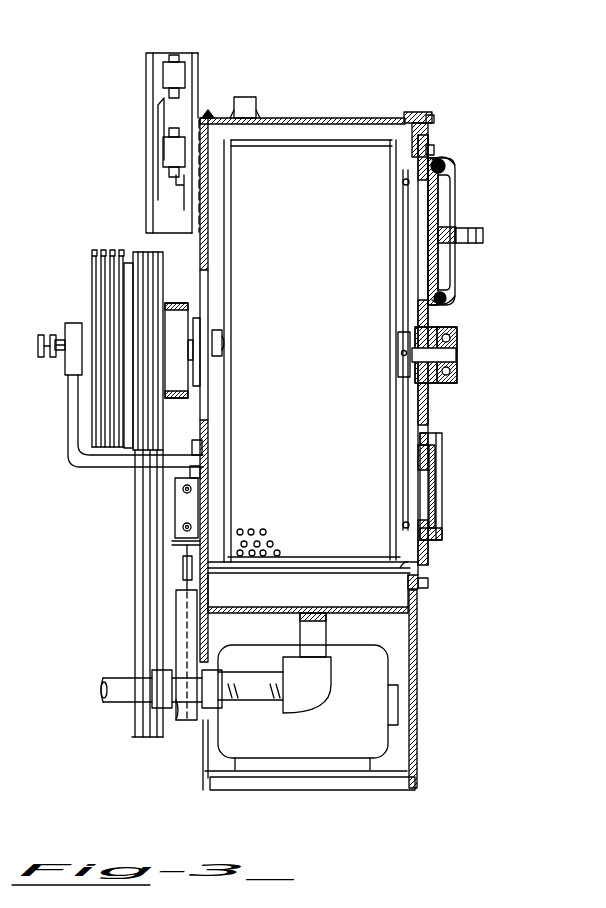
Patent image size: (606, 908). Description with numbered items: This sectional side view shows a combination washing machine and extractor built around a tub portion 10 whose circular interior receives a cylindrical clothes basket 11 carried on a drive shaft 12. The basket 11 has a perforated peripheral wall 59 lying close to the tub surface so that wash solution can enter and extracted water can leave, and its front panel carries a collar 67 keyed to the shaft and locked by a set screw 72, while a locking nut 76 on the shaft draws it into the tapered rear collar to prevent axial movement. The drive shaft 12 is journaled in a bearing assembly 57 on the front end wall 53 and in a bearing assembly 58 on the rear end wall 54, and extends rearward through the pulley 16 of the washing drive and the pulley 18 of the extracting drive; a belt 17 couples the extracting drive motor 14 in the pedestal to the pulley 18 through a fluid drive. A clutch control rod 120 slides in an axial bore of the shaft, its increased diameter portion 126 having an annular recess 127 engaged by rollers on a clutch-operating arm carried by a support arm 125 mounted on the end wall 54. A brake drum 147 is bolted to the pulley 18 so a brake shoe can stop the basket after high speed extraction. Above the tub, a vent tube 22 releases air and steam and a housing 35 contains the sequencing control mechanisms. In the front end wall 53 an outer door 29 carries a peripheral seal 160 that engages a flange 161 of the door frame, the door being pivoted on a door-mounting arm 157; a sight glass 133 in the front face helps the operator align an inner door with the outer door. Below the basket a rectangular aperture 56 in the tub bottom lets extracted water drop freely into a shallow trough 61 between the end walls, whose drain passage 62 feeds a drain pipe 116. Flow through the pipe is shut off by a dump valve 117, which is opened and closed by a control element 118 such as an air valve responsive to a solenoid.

The tub portion 10 is at (336, 120).
The clothes basket 11 is at (278, 138).
The drive shaft 12 is at (456, 355).
The extracting drive motor 14 is at (378, 678).
The pulley 16 is at (90, 252).
The belt 17 is at (125, 526).
The pulley 18 is at (134, 252).
The vent tube 22 is at (243, 96).
The outer door 29 is at (458, 192).
The housing 35 is at (203, 68).
The end wall 53 is at (426, 112).
The end wall 54 is at (207, 110).
The rectangular aperture 56 is at (420, 572).
The bearing assembly 57 is at (458, 333).
The bearing assembly 58 is at (201, 323).
The perforated peripheral wall 59 is at (378, 552).
The trough 61 is at (419, 584).
The drain passage 62 is at (320, 607).
The collar 67 is at (399, 340).
The set screw 72 is at (401, 353).
The locking nut 76 is at (222, 341).
The drain pipe 116 is at (326, 636).
The dump valve 117 is at (185, 712).
The control element 118 is at (196, 494).
The clutch control rod 120 is at (60, 358).
The support arm 125 is at (68, 397).
The increased diameter portion 126 is at (40, 338).
The annular recess 127 is at (52, 333).
The sight glass 133 is at (440, 472).
The brake drum 147 is at (185, 377).
The door-mounting arm 157 is at (481, 232).
The peripheral seal 160 is at (449, 163).
The flange 161 is at (439, 158).